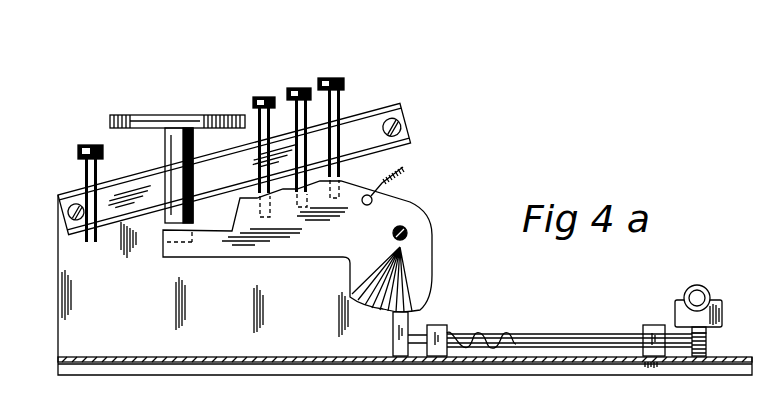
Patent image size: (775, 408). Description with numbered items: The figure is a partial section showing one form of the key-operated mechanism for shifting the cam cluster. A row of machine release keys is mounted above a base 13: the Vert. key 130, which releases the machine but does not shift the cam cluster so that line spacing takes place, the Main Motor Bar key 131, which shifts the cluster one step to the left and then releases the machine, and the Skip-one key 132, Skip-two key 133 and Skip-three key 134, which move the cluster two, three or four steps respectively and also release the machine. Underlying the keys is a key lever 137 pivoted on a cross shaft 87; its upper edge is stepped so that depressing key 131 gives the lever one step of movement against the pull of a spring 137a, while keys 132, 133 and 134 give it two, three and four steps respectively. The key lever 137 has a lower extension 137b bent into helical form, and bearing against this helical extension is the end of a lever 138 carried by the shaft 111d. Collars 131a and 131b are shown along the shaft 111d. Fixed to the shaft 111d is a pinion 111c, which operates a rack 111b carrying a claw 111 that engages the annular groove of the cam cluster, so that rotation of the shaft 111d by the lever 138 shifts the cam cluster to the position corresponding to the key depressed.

The base frame 13 is at (405, 285).
The Vert. key 130 is at (79, 156).
The Main Motor Bar key 131 is at (204, 114).
The Skip 1 key 132 is at (253, 99).
The Skip 2 key 133 is at (300, 88).
The Skip 3 key 134 is at (345, 83).
The key lever 137 is at (325, 255).
The spring 137a is at (410, 145).
The lower extension 137b is at (407, 287).
The cross shaft 87 is at (408, 233).
The lever 138 is at (393, 343).
The collar 131a is at (437, 325).
The shaft 111d is at (552, 333).
The collar 131b is at (647, 325).
The claw 111 is at (722, 313).
The rack 111b is at (707, 330).
The pinion 111c is at (707, 343).